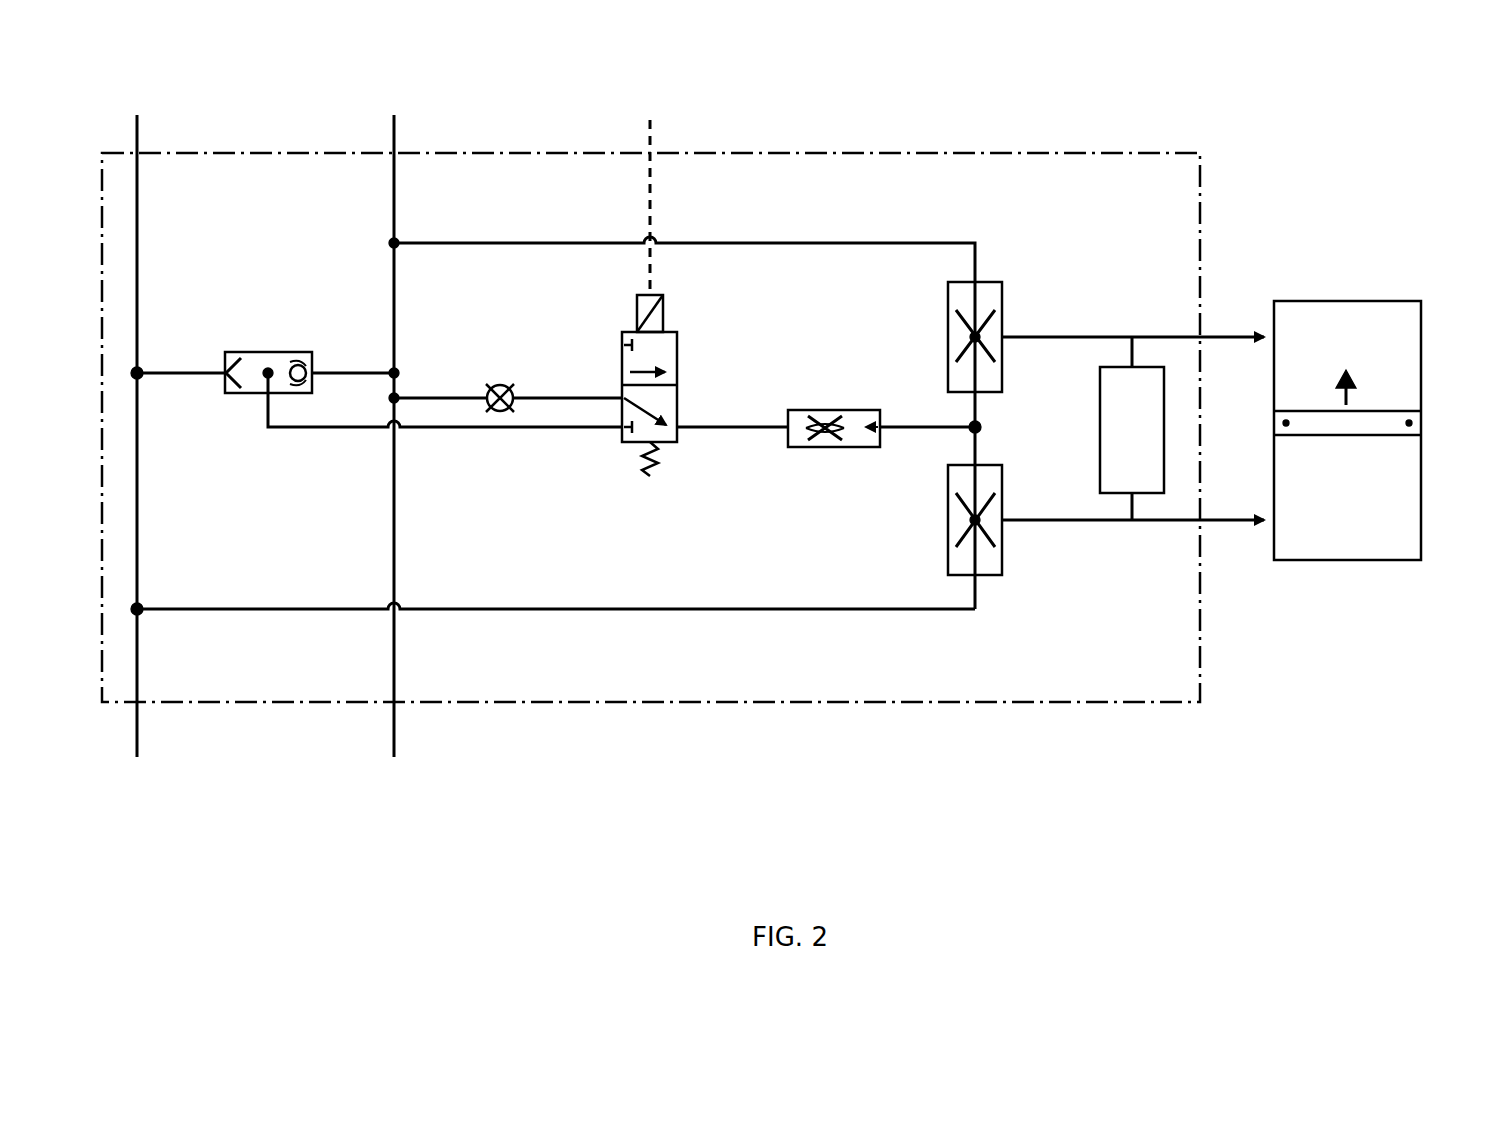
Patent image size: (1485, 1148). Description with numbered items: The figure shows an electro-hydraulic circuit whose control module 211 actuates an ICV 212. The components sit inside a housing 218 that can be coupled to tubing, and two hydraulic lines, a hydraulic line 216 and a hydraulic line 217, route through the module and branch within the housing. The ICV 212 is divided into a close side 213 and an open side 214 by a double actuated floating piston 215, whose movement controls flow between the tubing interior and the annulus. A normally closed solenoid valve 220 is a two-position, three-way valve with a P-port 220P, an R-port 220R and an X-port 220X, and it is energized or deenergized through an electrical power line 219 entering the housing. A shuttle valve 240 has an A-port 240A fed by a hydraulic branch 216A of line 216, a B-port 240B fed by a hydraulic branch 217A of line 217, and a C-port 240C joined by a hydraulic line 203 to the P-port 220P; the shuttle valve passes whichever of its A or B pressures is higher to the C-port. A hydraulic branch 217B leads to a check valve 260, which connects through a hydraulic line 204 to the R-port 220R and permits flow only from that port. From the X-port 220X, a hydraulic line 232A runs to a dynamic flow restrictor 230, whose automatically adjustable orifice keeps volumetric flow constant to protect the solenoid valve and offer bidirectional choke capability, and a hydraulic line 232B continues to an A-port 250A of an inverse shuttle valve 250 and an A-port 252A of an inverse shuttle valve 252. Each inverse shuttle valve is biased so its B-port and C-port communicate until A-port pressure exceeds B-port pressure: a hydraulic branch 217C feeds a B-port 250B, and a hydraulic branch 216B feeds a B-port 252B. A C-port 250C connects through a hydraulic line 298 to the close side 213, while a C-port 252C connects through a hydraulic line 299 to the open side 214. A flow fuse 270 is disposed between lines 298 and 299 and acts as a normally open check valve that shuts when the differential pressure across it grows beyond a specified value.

The control module 211 is at (918, 128).
The ICV 212 is at (1358, 296).
The close side 213 is at (1346, 371).
The open side 214 is at (1346, 493).
The double actuated floating piston 215 is at (1388, 420).
The hydraulic line 216 is at (140, 700).
The hydraulic branch 216A is at (165, 388).
The hydraulic branch 216B is at (312, 600).
The hydraulic line 217 is at (397, 712).
The hydraulic branch 217A is at (356, 370).
The hydraulic branch 217B is at (432, 398).
The hydraulic branch 217C is at (824, 238).
The housing 218 is at (1200, 180).
The electrical power line 219 is at (655, 178).
The normally closed solenoid valve 220 is at (678, 352).
The R-port 220R is at (620, 396).
The P-port 220P is at (618, 432).
The X-port 220X is at (690, 430).
The hydraulic line 203 is at (452, 438).
The hydraulic line 204 is at (545, 408).
The dynamic flow restrictor 230 is at (852, 448).
The hydraulic line 232A is at (720, 440).
The hydraulic line 232B is at (905, 434).
The shuttle valve 240 is at (282, 352).
The A-port 240A is at (222, 373).
The B-port 240B is at (314, 358).
The C-port 240C is at (268, 398).
The inverse shuttle valve 250 is at (945, 337).
The A-port 250A is at (982, 400).
The B-port 250B is at (984, 278).
The C-port 250C is at (1005, 331).
The inverse shuttle valve 252 is at (948, 510).
The A-port 252A is at (982, 460).
The B-port 252B is at (972, 580).
The C-port 252C is at (1006, 522).
The check valve 260 is at (500, 378).
The flow fuse 270 is at (1132, 428).
The hydraulic line 298 is at (1217, 333).
The hydraulic line 299 is at (1222, 523).